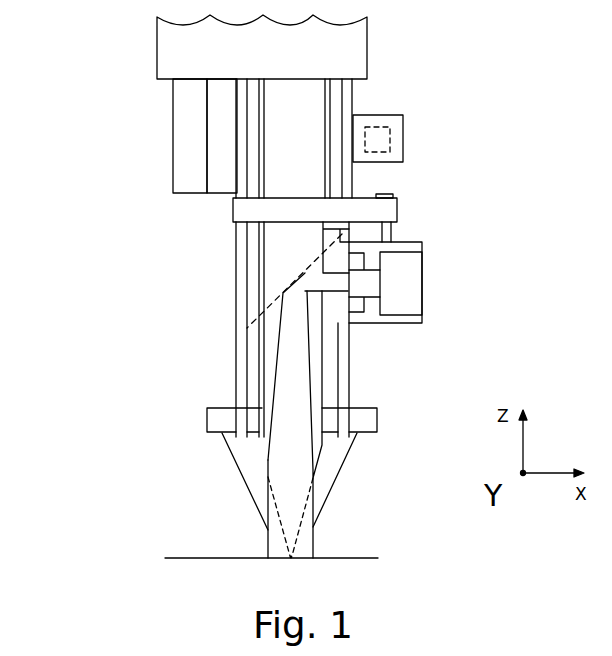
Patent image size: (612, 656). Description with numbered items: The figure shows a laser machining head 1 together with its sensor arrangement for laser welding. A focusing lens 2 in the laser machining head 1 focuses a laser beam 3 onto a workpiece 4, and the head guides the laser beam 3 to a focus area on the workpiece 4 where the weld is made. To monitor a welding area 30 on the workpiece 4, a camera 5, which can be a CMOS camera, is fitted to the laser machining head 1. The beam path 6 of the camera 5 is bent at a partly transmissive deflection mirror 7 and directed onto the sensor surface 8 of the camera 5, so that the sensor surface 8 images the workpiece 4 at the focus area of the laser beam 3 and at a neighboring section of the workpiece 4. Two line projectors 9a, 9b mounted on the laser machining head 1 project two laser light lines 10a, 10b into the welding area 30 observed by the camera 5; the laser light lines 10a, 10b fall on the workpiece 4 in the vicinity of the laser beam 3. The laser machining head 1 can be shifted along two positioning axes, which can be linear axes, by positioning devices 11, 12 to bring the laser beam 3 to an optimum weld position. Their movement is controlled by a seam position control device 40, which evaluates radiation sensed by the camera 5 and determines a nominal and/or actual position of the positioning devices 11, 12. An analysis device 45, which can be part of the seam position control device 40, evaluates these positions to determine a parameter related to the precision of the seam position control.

The laser machining head 1 is at (437, 197).
The focusing lens 2 is at (253, 433).
The laser beam 3 is at (262, 266).
The workpiece 4 is at (185, 556).
The camera 5 is at (402, 290).
The beam path 6 is at (263, 517).
The partly transmissive deflection mirror 7 is at (270, 303).
The sensor surface 8 is at (370, 281).
The line projector 9a is at (218, 416).
The line projector 9b is at (357, 420).
The laser light line 10a is at (242, 480).
The laser light line 10b is at (342, 478).
The positioning device 11 is at (192, 168).
The positioning device 12 is at (223, 125).
The welding area 30 is at (299, 579).
The seam position control device 40 is at (403, 108).
The analysis device 45 is at (390, 142).